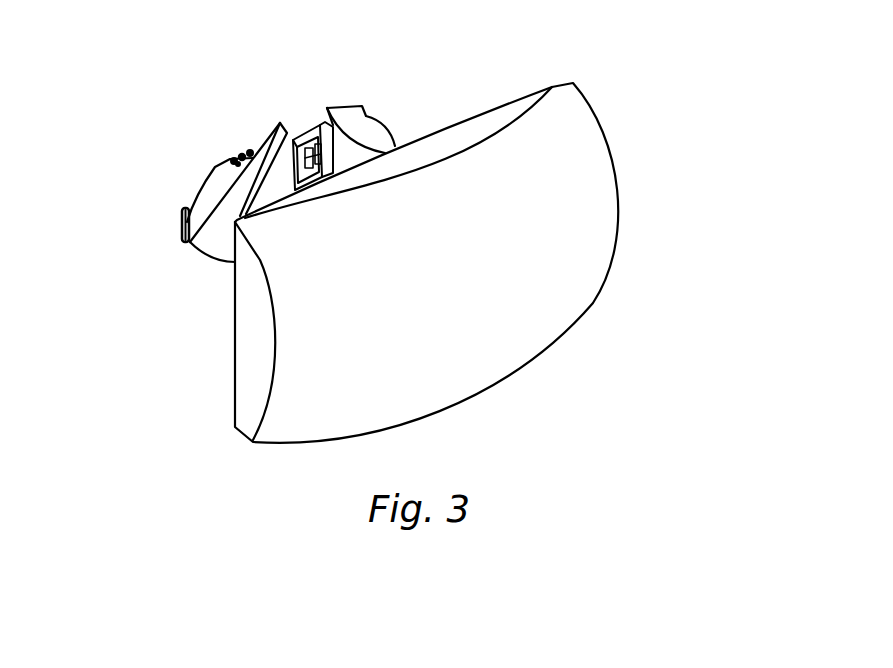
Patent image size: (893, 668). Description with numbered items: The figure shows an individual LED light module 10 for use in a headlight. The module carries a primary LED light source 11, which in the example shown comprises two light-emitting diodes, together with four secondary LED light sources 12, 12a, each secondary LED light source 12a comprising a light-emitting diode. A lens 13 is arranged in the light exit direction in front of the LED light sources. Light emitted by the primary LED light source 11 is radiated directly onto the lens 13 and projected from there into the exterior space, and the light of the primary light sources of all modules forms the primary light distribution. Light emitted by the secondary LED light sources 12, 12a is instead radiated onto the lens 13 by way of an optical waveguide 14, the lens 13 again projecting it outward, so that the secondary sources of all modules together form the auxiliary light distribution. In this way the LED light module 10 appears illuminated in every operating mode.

The LED light module 10 is at (638, 75).
The primary LED light source 11 is at (300, 123).
The secondary LED light source 12 is at (178, 225).
The secondary LED light source 12a is at (240, 157).
The lens 13 is at (593, 235).
The optical waveguide 14 is at (360, 137).